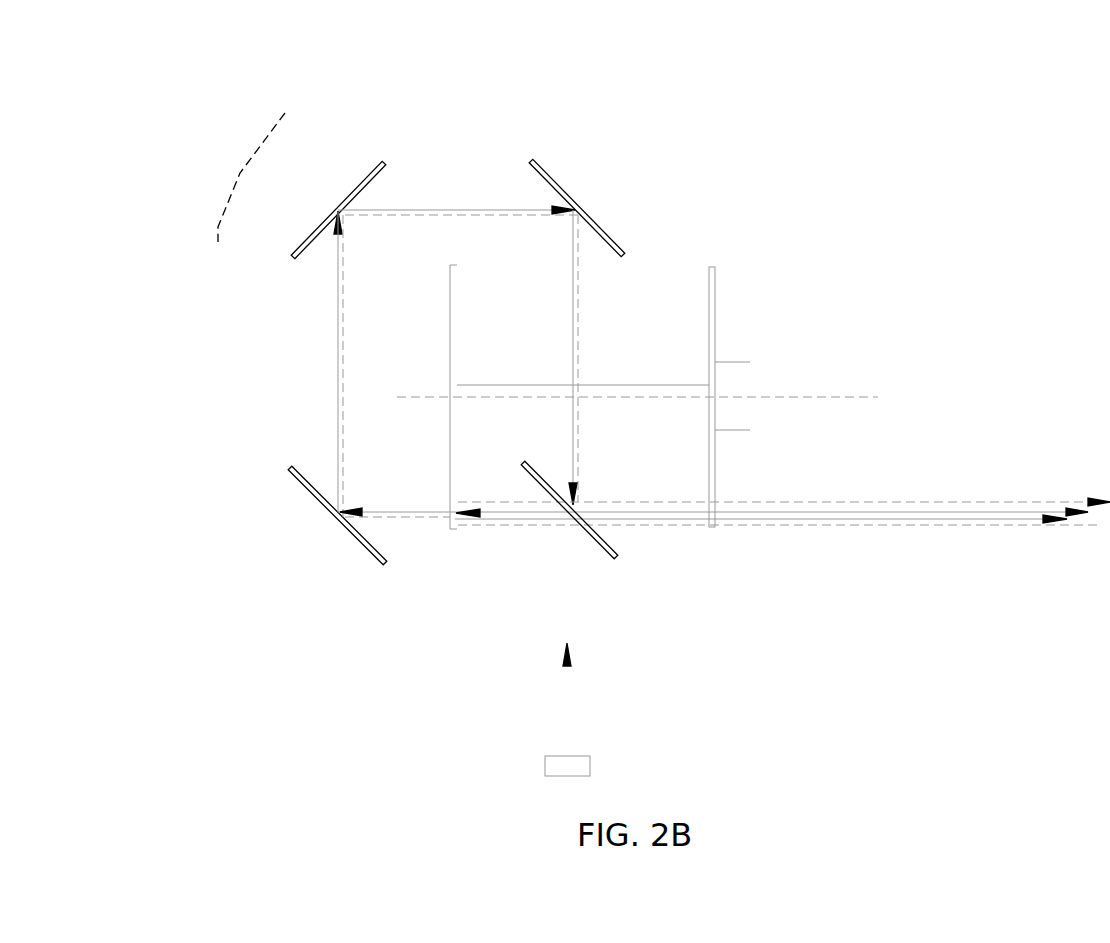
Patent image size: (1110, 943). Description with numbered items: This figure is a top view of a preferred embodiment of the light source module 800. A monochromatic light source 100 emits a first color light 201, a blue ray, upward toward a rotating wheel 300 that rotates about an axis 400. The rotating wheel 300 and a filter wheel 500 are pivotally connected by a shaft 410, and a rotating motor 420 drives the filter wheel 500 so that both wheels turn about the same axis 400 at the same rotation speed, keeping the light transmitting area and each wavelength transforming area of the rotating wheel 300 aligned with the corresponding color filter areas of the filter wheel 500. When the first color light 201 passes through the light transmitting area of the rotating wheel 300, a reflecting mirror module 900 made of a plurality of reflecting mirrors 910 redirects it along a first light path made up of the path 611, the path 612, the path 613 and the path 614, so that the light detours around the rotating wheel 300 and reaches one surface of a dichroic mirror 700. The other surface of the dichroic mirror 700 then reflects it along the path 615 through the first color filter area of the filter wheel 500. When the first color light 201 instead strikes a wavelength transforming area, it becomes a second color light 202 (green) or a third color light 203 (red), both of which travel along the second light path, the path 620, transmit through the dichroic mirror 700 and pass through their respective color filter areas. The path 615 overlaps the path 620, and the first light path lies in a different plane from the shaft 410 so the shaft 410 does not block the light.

The light source module 800 is at (140, 100).
The reflecting mirror module 900 is at (244, 177).
The reflecting mirror 910 is at (540, 173).
The path 613 is at (401, 217).
The path 612 is at (343, 358).
The path 614 is at (580, 333).
The path 611 is at (395, 518).
The path 615 is at (838, 502).
The path 620 is at (837, 525).
The third color light 203 is at (933, 505).
The second color light 202 is at (932, 522).
The first color light 201 is at (543, 513).
The rotating wheel 300 is at (453, 530).
The dichroic mirror 700 is at (612, 545).
The filter wheel 500 is at (712, 527).
The shaft 410 is at (623, 385).
The rotating motor 420 is at (738, 375).
The axis 400 is at (797, 397).
The monochromatic light source 100 is at (545, 762).